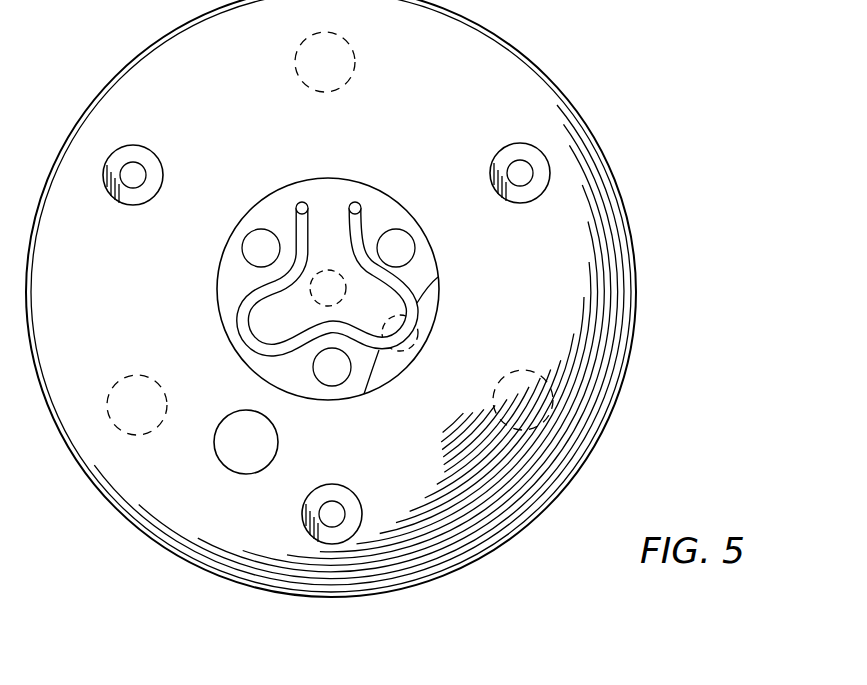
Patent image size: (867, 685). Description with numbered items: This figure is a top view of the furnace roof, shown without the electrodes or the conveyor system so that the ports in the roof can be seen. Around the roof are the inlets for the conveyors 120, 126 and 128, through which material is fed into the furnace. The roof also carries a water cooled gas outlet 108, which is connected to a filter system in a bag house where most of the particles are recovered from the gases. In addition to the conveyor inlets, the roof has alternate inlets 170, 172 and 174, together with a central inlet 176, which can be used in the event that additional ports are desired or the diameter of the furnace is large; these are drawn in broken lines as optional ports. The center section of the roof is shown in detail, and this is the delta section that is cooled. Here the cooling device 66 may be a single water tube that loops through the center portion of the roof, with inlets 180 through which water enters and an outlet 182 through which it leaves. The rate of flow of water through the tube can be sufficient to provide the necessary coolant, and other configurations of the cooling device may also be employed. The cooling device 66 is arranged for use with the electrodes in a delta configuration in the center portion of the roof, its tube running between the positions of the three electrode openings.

The cooling device 66 is at (243, 298).
The water cooled gas outlet 108 is at (218, 462).
The conveyor inlet 120 is at (349, 486).
The conveyor inlet 126 is at (497, 152).
The conveyor inlet 128 is at (159, 157).
The alternate inlet 170 is at (514, 371).
The alternate inlet 172 is at (352, 51).
The alternate inlet 174 is at (148, 376).
The central inlet 176 is at (346, 297).
The inlets 180 is at (300, 203).
The outlet 182 is at (357, 202).